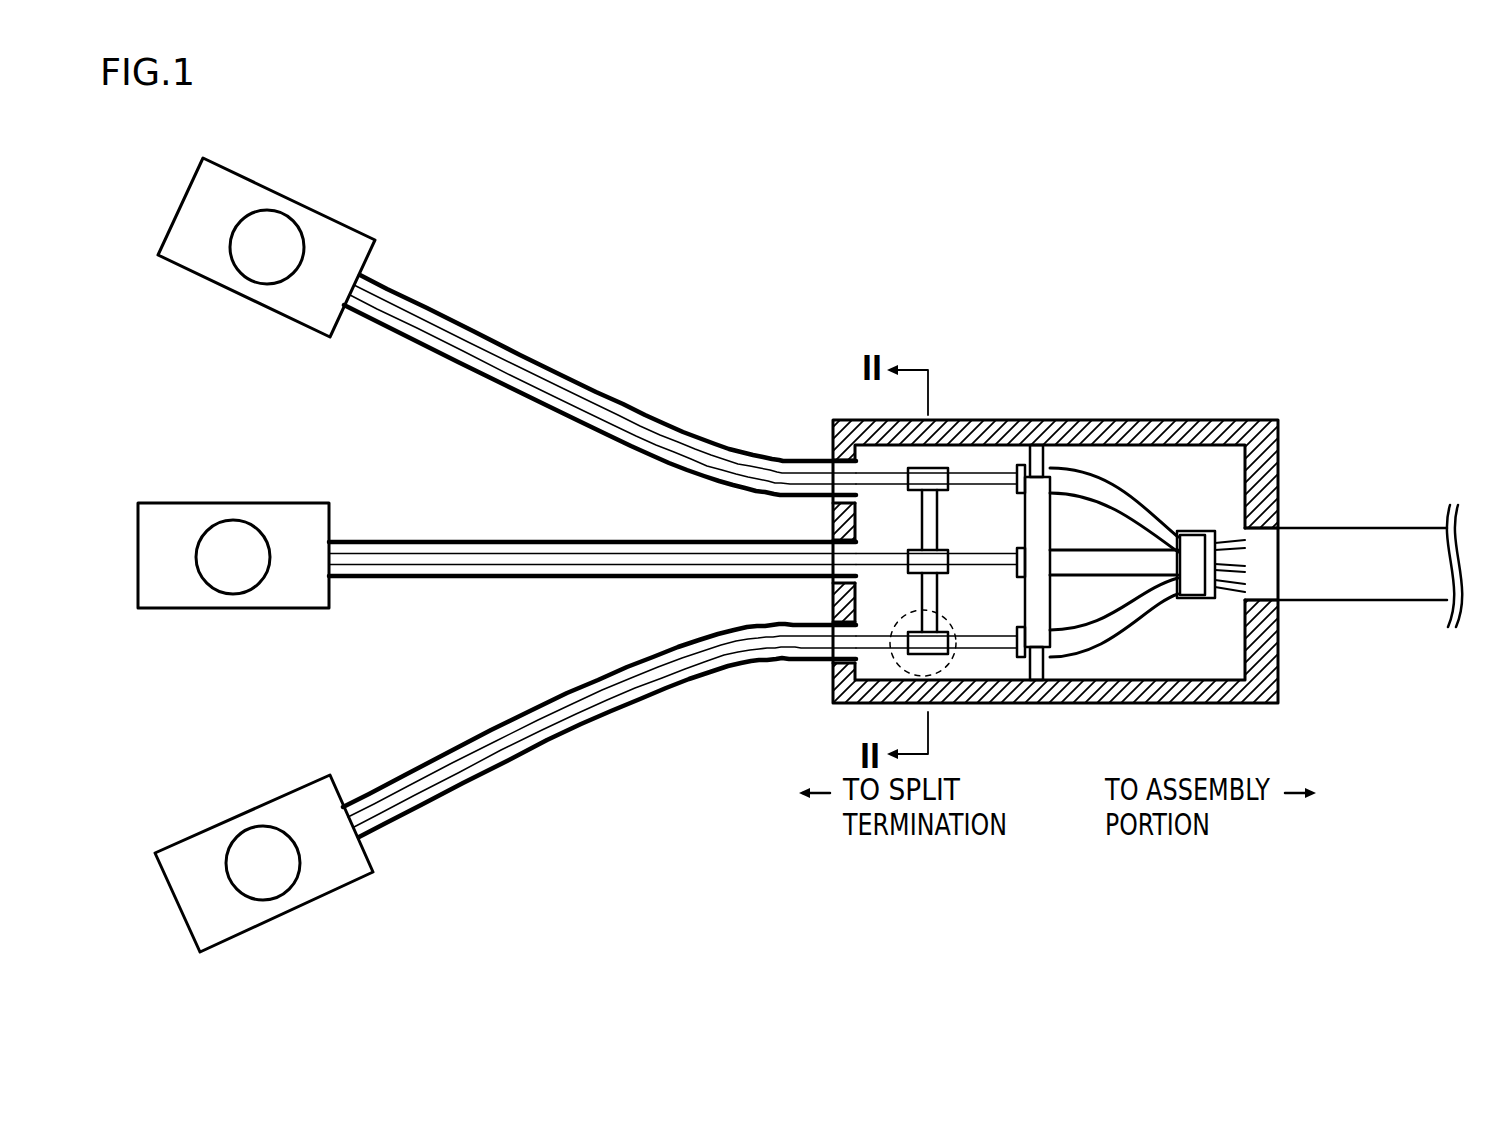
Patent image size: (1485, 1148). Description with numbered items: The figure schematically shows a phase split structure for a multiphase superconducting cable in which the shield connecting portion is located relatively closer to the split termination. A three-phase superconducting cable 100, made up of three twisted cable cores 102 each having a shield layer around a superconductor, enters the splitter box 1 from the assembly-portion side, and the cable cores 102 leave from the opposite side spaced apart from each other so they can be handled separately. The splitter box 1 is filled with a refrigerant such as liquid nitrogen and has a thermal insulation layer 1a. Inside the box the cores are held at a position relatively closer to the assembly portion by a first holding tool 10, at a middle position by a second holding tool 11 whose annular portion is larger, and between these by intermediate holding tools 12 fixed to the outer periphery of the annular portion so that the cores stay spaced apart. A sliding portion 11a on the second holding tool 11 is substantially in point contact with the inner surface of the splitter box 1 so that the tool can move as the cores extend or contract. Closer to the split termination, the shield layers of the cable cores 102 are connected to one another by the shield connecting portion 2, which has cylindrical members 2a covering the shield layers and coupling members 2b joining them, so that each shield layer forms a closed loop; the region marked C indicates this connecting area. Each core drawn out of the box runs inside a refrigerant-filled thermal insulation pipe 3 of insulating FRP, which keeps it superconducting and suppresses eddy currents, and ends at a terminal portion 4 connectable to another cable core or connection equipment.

The splitter box 1 is at (1279, 470).
The thermal insulation layer 1a is at (1280, 435).
The first holding tool 10 is at (1207, 523).
The second holding tool 11 is at (1062, 517).
The sliding portion 11a is at (1049, 443).
The intermediate holding tool 12 is at (1122, 535).
The superconducting cable 100 is at (1330, 528).
The cable core 102 is at (622, 437).
The shield connecting portion 2 is at (897, 457).
The cylindrical member 2a is at (941, 467).
The coupling member 2b is at (915, 590).
The thermal insulation pipe 3 is at (754, 628).
The terminal portion 4 is at (307, 330).
The enlarged region C is at (949, 671).